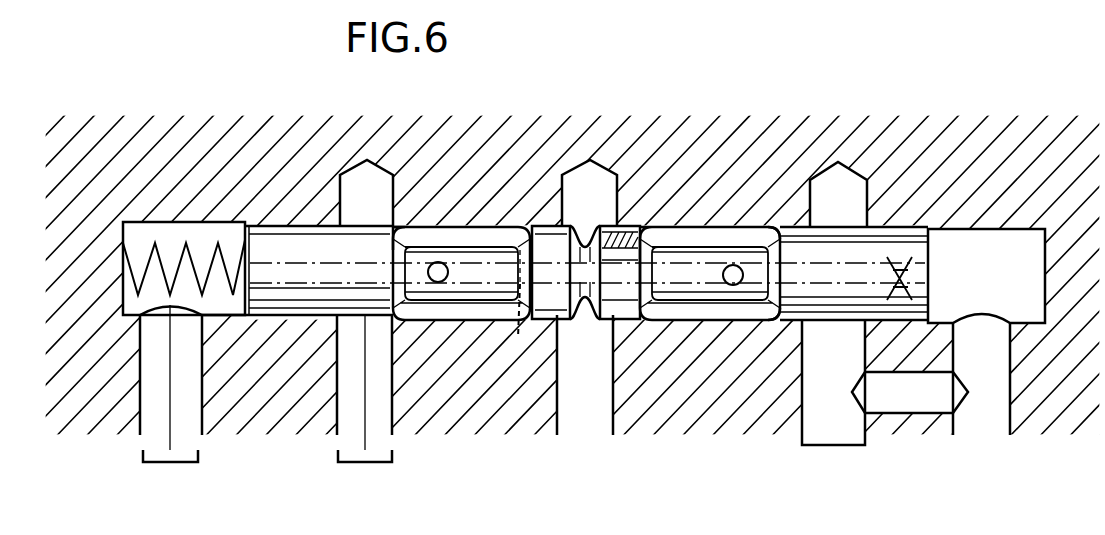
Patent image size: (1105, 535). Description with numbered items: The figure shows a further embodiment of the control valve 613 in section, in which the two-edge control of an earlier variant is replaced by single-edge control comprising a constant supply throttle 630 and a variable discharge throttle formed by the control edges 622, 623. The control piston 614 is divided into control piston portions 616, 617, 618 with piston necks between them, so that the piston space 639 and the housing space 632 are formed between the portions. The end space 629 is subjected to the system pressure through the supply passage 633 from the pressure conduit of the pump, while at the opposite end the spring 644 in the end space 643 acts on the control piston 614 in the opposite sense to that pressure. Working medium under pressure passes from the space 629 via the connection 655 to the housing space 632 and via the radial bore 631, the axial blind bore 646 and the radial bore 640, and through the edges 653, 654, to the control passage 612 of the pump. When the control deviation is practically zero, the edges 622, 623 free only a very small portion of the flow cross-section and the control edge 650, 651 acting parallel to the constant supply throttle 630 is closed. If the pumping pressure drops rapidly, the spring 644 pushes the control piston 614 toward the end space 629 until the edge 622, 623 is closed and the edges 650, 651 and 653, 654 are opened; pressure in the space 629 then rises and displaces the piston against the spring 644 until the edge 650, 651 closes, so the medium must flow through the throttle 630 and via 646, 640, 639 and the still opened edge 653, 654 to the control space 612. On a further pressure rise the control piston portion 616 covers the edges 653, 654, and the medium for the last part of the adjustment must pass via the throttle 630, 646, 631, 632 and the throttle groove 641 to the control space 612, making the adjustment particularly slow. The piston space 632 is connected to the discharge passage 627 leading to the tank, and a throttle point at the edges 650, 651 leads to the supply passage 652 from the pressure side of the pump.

The control passage 612 is at (598, 380).
The control valve 613 is at (151, 215).
The control piston 614 is at (257, 240).
The control piston portion 616 is at (600, 181).
The control piston portion 617 is at (338, 268).
The control piston portion 618 is at (879, 240).
The control edge 622 is at (396, 245).
The control edge 623 is at (393, 245).
The discharge passage 627 is at (380, 352).
The end space 629 is at (990, 243).
The constant supply throttle 630 is at (906, 284).
The radial bore 631 is at (734, 285).
The housing space 632 is at (700, 235).
The supply passage 633 is at (995, 423).
The piston space 639 is at (465, 233).
The radial bore 640 is at (440, 282).
The throttle groove 641 is at (623, 237).
The end space 643 is at (141, 302).
The spring 644 is at (207, 285).
The axial blind bore 646 is at (530, 307).
The control edge 650 is at (773, 240).
The control edge 651 is at (808, 224).
The supply passage 652 is at (848, 426).
The control edge 653 is at (520, 240).
The control edge 654 is at (558, 240).
The connection 655 is at (908, 403).